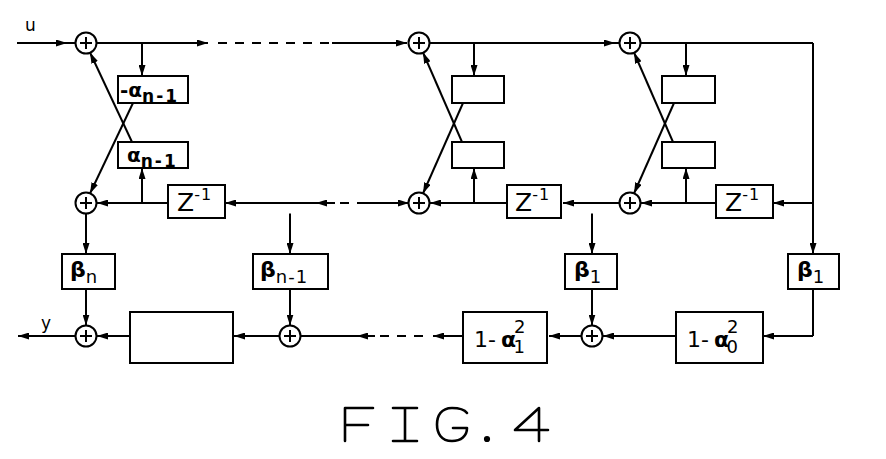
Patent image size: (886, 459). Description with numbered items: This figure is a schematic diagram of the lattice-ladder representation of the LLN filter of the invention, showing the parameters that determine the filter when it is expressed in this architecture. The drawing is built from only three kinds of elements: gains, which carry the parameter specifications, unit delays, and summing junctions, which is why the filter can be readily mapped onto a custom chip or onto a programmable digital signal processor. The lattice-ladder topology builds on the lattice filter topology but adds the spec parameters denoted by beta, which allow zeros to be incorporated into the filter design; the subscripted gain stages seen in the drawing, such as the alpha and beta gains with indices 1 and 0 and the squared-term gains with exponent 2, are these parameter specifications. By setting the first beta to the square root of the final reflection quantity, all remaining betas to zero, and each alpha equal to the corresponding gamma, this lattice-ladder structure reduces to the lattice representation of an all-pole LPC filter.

The alpha-1 lattice multiplier stage 1 is at (463, 123).
The alpha-0 lattice multiplier stage 0 is at (674, 123).
The 1-alpha squared scaling block 2 is at (188, 337).